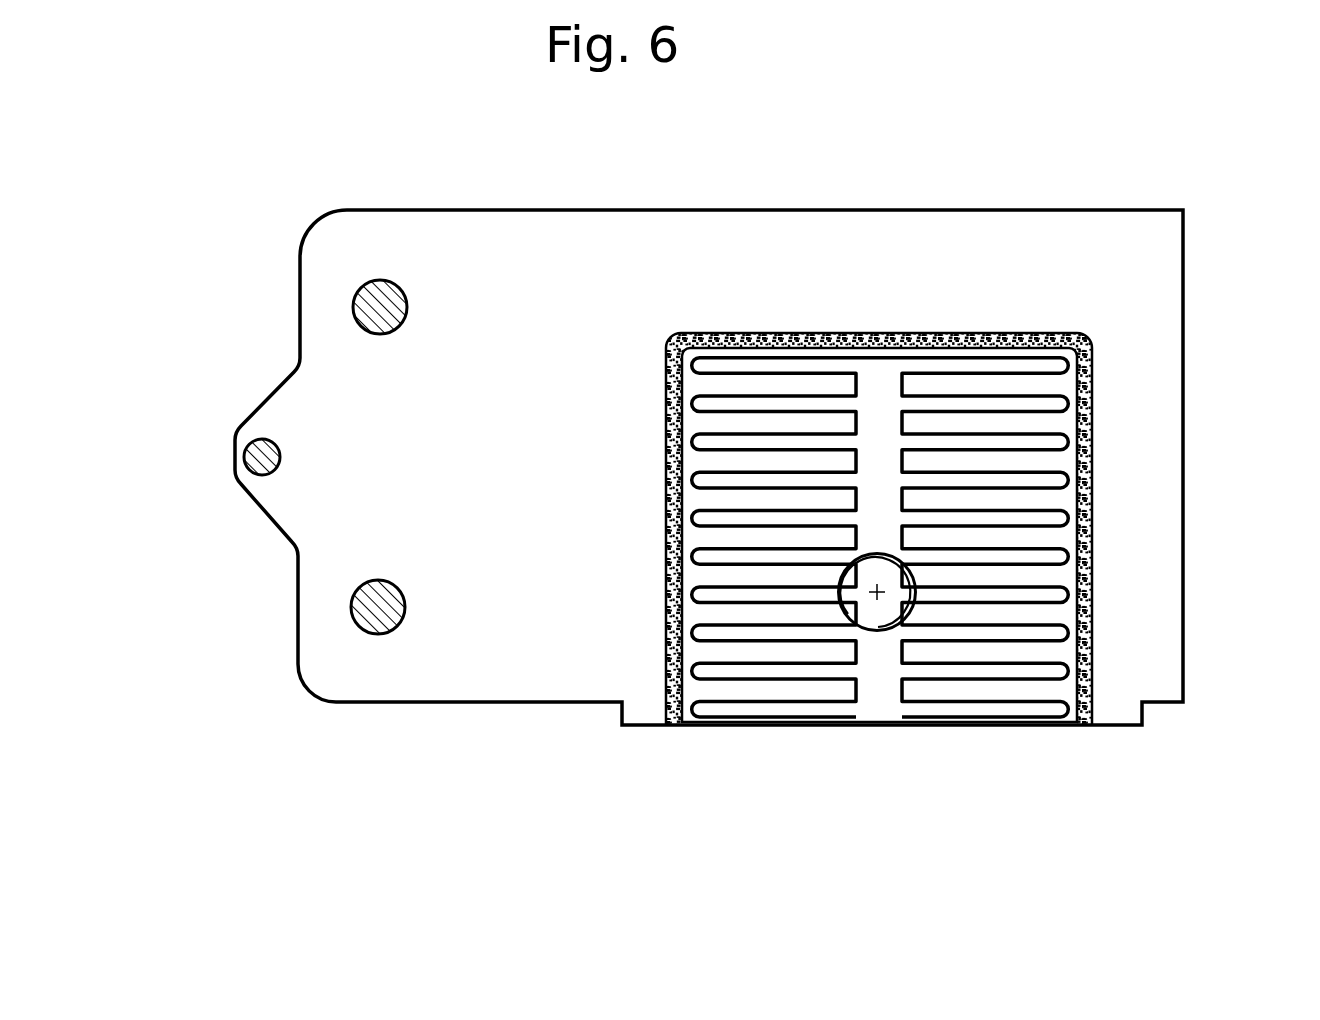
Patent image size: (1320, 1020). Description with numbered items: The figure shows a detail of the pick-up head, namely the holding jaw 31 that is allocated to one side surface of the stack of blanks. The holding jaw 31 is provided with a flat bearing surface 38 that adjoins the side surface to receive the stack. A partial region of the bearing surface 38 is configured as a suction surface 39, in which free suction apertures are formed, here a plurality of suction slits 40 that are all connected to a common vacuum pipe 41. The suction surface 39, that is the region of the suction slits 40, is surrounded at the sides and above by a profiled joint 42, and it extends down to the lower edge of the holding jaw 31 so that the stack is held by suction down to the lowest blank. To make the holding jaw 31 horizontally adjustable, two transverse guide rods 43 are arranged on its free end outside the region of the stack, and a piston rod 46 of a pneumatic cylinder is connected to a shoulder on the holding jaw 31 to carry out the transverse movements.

The holding jaw 31 is at (709, 421).
The bearing surface 38 is at (973, 283).
The suction surface 39 is at (924, 566).
The suction slits 40 is at (798, 690).
The vacuum pipe 41 is at (884, 631).
The profiled joint 42 is at (666, 598).
The transverse guide rods 43 is at (384, 300).
The piston rod 46 is at (262, 450).